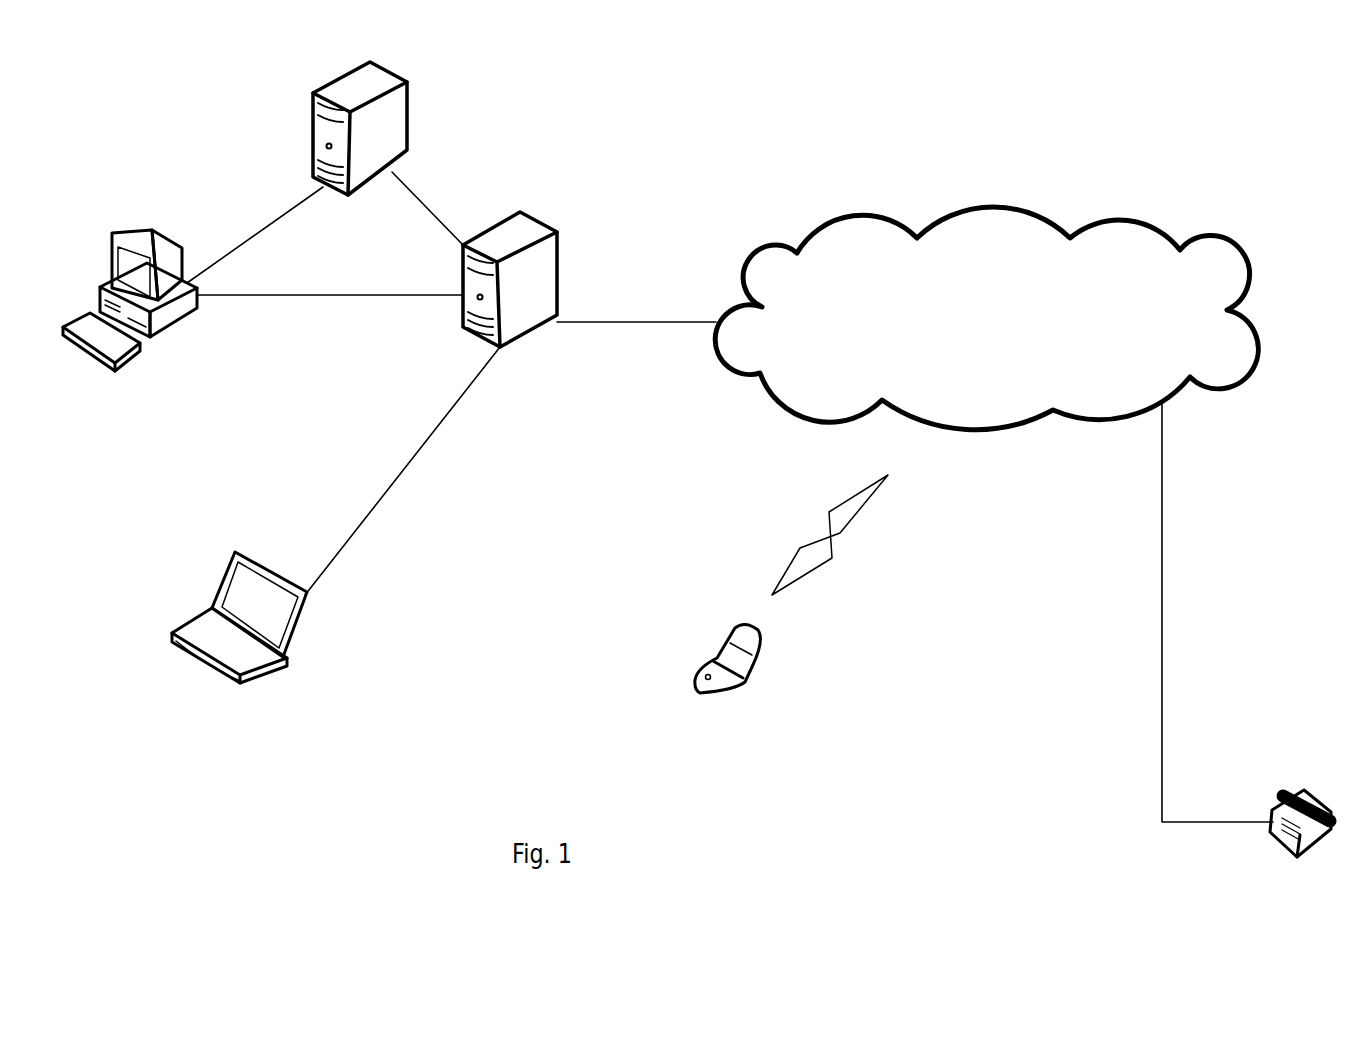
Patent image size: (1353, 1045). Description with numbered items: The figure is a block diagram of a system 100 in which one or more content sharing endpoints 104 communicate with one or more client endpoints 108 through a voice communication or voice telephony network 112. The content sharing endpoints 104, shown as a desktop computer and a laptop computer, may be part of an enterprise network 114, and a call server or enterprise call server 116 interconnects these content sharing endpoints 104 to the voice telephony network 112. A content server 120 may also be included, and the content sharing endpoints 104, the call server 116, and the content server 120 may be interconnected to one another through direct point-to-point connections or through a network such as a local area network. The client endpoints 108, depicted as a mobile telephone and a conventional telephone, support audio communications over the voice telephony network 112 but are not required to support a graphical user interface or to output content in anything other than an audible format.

The system 100 is at (628, 93).
The content sharing endpoint 104 is at (112, 235).
The client endpoint 108 is at (723, 690).
The voice telephony network 112 is at (945, 213).
The enterprise network 114 is at (375, 572).
The enterprise call server 116 is at (540, 222).
The content server 120 is at (310, 97).